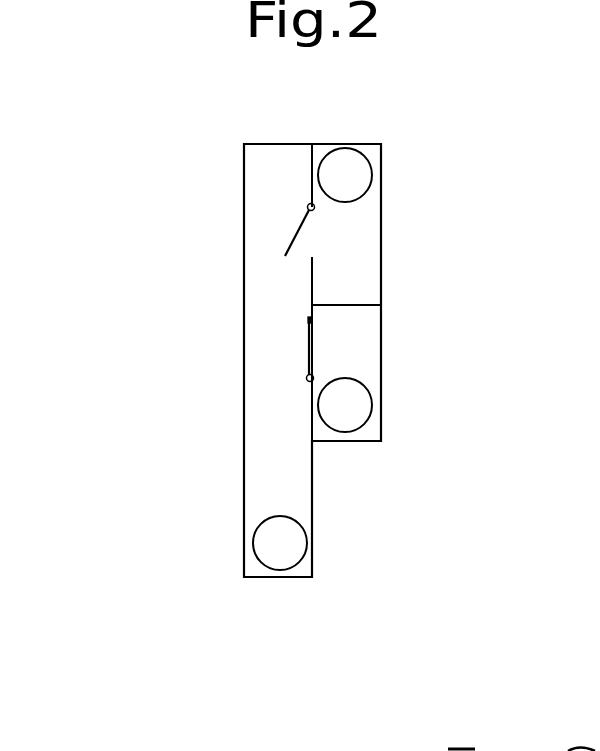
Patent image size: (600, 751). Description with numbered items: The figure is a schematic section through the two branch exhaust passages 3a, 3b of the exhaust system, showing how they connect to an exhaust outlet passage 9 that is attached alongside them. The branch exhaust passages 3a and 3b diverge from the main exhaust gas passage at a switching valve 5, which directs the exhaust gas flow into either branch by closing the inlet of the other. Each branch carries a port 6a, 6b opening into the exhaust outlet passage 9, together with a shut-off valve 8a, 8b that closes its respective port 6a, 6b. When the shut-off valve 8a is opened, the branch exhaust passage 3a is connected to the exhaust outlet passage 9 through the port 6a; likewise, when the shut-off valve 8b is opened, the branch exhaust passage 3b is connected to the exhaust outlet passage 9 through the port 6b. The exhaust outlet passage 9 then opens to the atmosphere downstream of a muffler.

The exhaust outlet passage 9 is at (248, 460).
The switching valve 5 is at (357, 305).
The branch exhaust passage 3a is at (381, 178).
The branch exhaust passage 3b is at (368, 408).
The shut-off valve 8a is at (290, 234).
The shut-off valve 8b is at (307, 344).
The port 6a is at (310, 237).
The port 6b is at (320, 357).